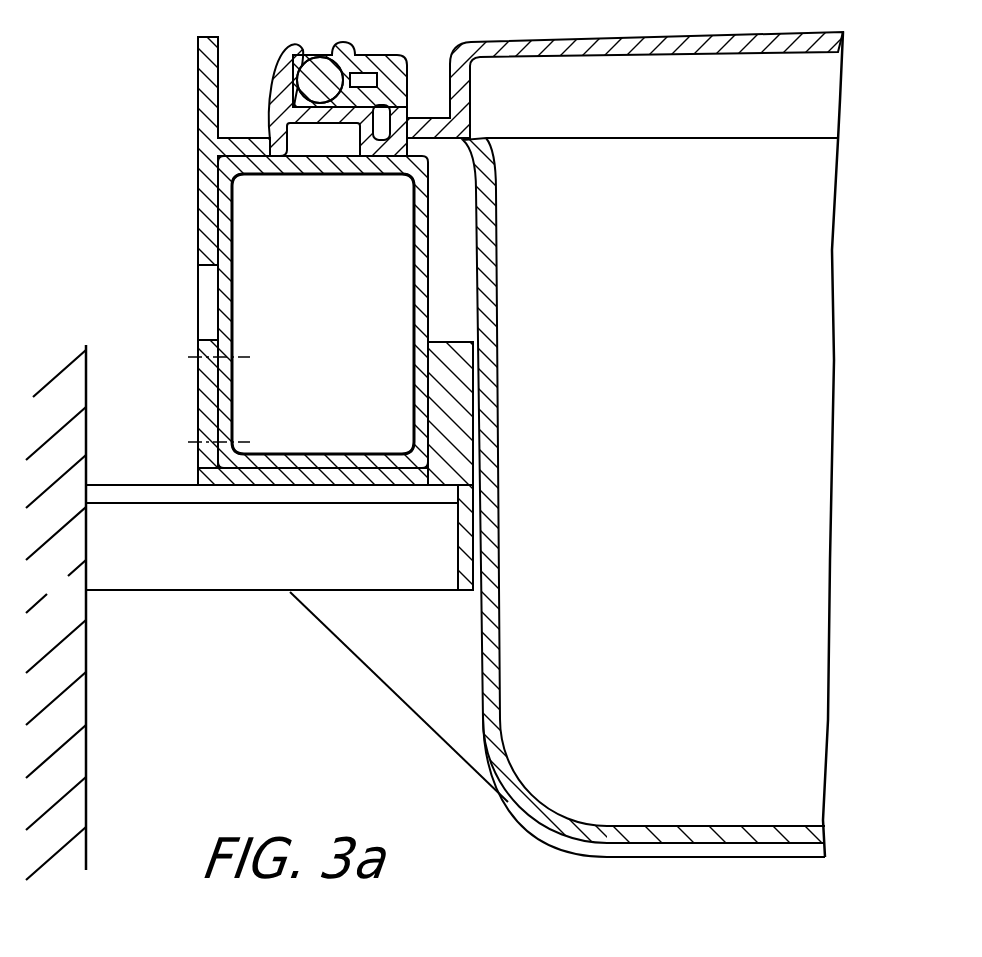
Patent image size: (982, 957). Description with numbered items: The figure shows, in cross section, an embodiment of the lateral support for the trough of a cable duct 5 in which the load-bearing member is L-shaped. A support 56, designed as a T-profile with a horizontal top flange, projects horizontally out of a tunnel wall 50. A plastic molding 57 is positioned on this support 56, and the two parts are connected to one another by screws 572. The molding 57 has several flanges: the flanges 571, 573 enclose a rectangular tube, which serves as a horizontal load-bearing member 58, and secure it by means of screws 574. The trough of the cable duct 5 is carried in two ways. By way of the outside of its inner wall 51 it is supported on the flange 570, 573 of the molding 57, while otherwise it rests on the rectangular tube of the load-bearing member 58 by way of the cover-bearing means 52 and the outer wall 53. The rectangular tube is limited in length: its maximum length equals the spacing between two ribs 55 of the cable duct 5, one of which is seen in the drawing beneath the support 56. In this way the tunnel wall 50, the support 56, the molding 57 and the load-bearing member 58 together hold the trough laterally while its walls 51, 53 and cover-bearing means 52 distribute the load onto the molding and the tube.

The cable duct 5 is at (501, 811).
The tunnel wall 50 is at (65, 600).
The inner wall 51 is at (503, 642).
The cover-bearing means 52 is at (478, 155).
The outer wall 53 is at (208, 187).
The ribs 55 is at (440, 651).
The support 56 is at (212, 577).
The plastic molding 57 is at (361, 447).
The flange 570 is at (467, 511).
The flange 571 is at (202, 386).
The screws 572 is at (345, 462).
The flange 573 is at (463, 373).
The screws 574 is at (193, 352).
The horizontal load-bearing member 58 is at (475, 274).